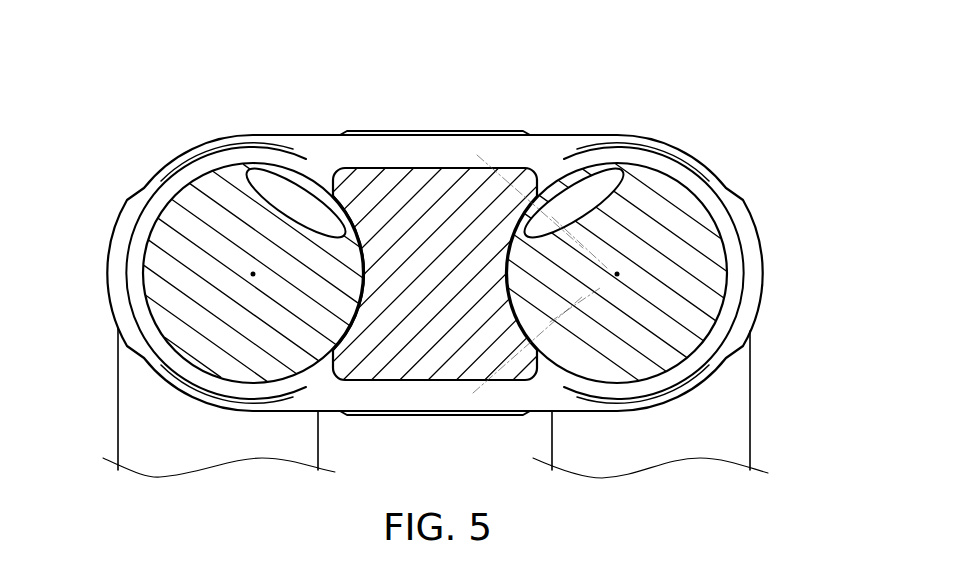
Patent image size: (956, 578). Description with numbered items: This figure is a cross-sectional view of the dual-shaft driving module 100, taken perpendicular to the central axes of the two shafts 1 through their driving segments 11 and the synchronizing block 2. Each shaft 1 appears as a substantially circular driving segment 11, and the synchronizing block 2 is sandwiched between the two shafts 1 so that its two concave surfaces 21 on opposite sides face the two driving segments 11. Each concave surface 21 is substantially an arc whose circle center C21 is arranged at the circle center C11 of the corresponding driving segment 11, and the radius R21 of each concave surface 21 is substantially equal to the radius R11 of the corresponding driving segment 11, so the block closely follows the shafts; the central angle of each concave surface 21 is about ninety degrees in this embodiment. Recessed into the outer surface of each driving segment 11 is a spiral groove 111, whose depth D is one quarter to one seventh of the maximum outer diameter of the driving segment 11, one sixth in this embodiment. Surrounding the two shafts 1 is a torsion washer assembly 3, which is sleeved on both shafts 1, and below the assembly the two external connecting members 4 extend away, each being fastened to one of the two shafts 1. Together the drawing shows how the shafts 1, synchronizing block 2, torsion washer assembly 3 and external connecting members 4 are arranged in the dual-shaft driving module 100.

The dual-shaft driving module 100 is at (151, 63).
The shaft 1 is at (427, 242).
The driving segment 11 is at (253, 234).
The spiral groove 111 is at (273, 182).
The synchronizing block 2 is at (421, 247).
The concave surface 21 is at (343, 327).
The torsion washer assembly 3 is at (438, 236).
The external connecting member 4 is at (108, 401).
The depth of spiral groove D is at (287, 218).
The radius of driving segment R11 is at (253, 274).
The radius of concave surface R21 is at (363, 290).
The circle center of driving segment C11 is at (619, 272).
The circle center of concave surface C21 is at (673, 255).